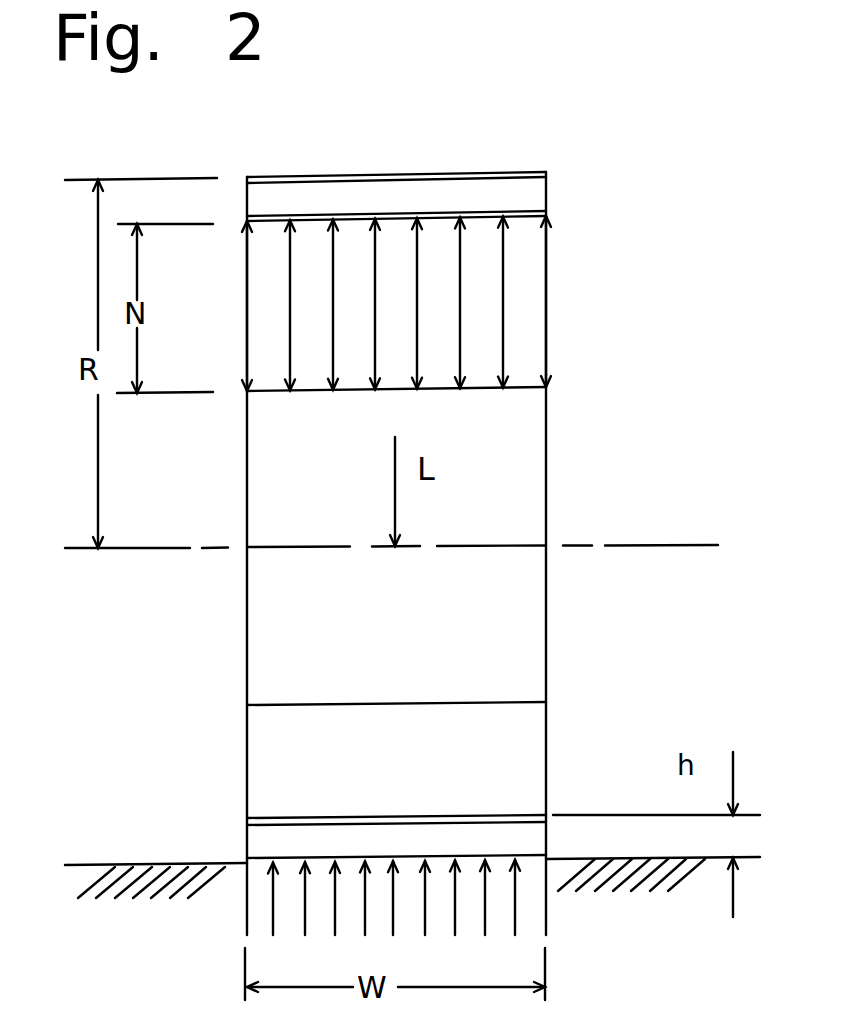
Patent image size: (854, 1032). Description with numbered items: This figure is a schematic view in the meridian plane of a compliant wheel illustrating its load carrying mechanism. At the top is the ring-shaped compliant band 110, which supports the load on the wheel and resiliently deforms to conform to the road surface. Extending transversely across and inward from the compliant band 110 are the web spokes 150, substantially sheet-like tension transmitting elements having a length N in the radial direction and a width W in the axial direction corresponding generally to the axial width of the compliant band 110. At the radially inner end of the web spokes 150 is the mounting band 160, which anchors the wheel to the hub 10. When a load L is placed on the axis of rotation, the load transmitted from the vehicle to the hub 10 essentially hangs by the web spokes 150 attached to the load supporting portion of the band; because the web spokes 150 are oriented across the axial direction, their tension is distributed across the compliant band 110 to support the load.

The hub 10 is at (546, 513).
The compliant band 110 is at (467, 193).
The web spokes 150 is at (546, 330).
The mounting band 160 is at (480, 391).